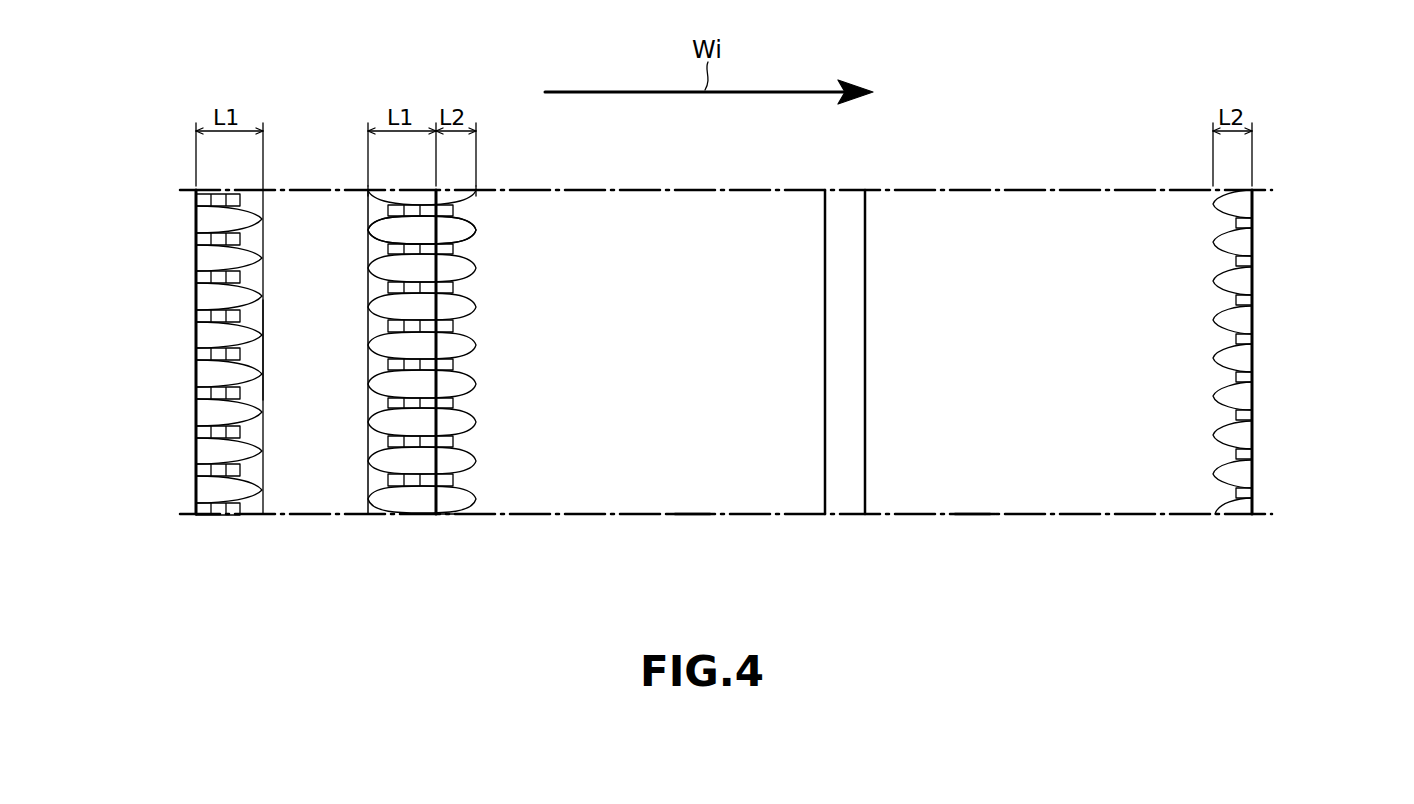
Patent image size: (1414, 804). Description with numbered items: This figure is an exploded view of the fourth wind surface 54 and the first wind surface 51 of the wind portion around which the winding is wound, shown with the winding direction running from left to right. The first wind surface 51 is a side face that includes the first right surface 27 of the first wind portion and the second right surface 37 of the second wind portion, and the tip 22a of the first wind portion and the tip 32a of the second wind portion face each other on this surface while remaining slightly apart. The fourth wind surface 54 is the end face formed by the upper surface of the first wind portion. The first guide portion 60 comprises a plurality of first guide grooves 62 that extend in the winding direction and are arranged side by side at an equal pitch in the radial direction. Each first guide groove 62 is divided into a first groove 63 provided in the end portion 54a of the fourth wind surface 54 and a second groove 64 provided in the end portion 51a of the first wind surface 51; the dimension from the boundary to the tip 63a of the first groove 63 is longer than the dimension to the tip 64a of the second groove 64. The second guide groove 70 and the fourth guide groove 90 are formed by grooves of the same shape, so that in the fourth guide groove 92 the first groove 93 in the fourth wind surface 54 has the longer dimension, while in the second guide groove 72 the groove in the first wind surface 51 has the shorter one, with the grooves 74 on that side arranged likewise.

The fourth guide portion 90 is at (158, 329).
The fourth guide groove 92 is at (176, 341).
The first groove 93 is at (210, 190).
The first guide portion 60 is at (454, 333).
The first guide groove 62 is at (471, 304).
The first groove 63 is at (396, 236).
The second groove 64 is at (466, 244).
The tip of the first groove 63a is at (368, 190).
The tip of the second groove 64a is at (514, 176).
The fourth wind surface 54 is at (320, 485).
The end portion of the fourth wind surface 54a is at (413, 515).
The end portion of the first wind surface 51a is at (442, 515).
The first wind surface 51 is at (829, 387).
The tip of the first wind portion 22a is at (826, 220).
The tip of the second wind portion 32a is at (862, 207).
The first right surface 27 is at (690, 485).
The second right surface 37 is at (975, 530).
The second guide groove 70 is at (1307, 352).
The second guide groove 72 is at (1287, 358).
The fin lobes 74 is at (1347, 489).